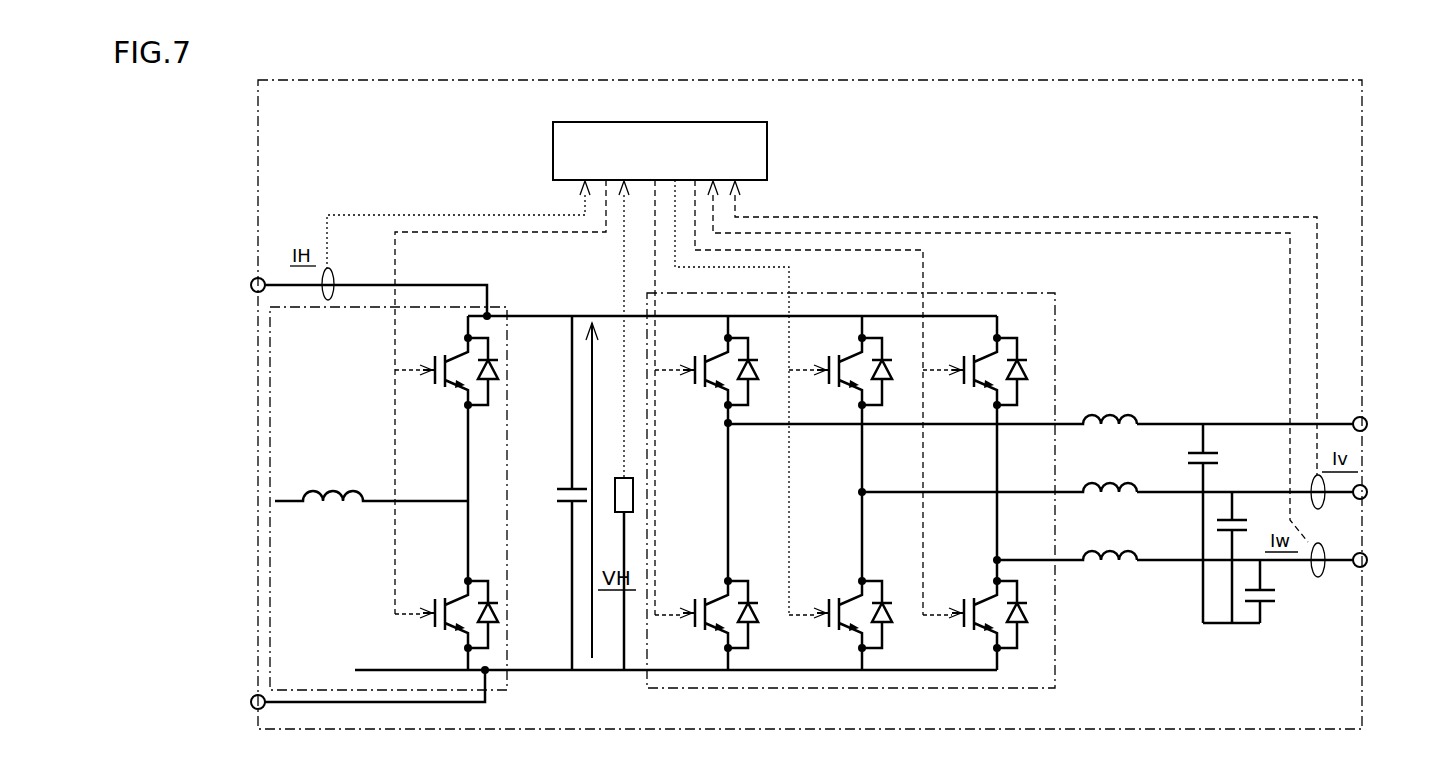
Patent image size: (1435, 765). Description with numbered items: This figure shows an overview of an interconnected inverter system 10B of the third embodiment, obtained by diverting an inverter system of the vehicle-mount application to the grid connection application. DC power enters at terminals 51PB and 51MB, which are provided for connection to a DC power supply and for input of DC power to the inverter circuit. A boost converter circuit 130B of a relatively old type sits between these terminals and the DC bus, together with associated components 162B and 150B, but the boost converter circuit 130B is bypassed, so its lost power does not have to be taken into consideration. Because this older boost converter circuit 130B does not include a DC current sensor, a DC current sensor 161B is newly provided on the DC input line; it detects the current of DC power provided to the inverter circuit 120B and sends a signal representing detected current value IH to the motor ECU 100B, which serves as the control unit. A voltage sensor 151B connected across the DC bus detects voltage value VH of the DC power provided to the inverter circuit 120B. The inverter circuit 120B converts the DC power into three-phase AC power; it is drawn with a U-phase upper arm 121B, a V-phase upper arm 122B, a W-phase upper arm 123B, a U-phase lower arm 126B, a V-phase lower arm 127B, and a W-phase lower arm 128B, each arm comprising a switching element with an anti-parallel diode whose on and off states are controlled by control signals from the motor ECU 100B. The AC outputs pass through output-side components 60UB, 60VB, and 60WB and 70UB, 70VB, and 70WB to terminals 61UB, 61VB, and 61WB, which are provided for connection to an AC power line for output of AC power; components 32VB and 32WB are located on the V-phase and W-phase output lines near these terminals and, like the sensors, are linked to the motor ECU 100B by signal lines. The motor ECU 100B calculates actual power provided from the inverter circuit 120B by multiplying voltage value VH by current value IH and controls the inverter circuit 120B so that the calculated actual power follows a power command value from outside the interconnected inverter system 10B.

The interconnected inverter system 10B is at (311, 113).
The motor ECU 100B is at (694, 122).
The terminal 51PB is at (253, 279).
The terminal 51MB is at (253, 708).
The DC current sensor 161B is at (328, 300).
The reactor 162B is at (335, 512).
The boost converter circuit 130B is at (422, 512).
The smoothing capacitor 150B is at (565, 488).
The voltage sensor 151B is at (625, 514).
The inverter circuit 120B is at (859, 505).
The switching element (U upper arm) 121B is at (742, 408).
The switching element (V upper arm) 122B is at (876, 408).
The switching element (W upper arm) 123B is at (1010, 408).
The switching element (U lower arm) 126B is at (742, 578).
The switching element (V lower arm) 127B is at (876, 578).
The switching element (W lower arm) 128B is at (1010, 578).
The U-phase coil (filter inductor) 60UB is at (1100, 418).
The V-phase coil (filter inductor) 60VB is at (1100, 486).
The W-phase coil (filter inductor) 60WB is at (1100, 554).
The U-phase filter capacitor 70UB is at (1210, 448).
The V-phase filter capacitor 70VB is at (1238, 518).
The W-phase filter capacitor 70WB is at (1268, 604).
The terminal 61UB is at (1366, 418).
The terminal 61VB is at (1366, 486).
The terminal 61WB is at (1366, 567).
The V-phase current sensor 32VB is at (1323, 507).
The W-phase current sensor 32WB is at (1322, 575).